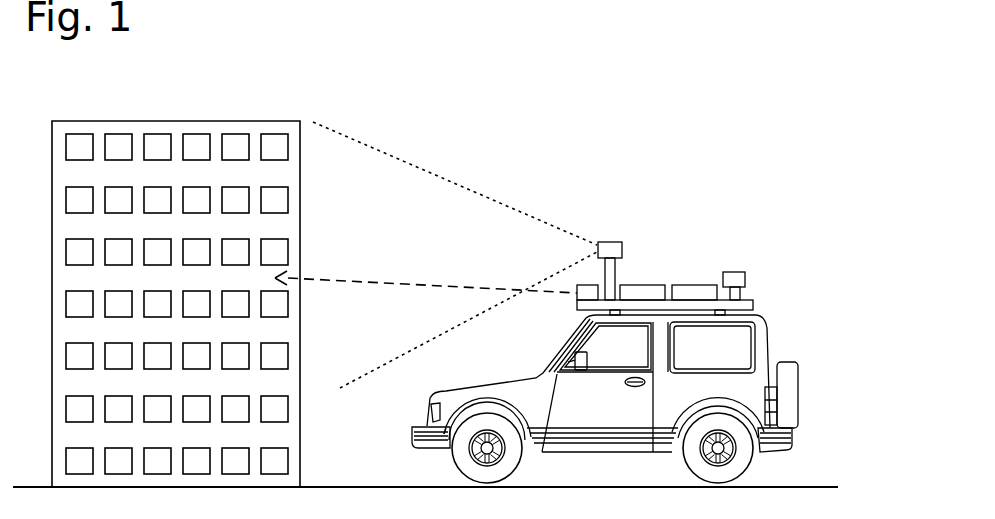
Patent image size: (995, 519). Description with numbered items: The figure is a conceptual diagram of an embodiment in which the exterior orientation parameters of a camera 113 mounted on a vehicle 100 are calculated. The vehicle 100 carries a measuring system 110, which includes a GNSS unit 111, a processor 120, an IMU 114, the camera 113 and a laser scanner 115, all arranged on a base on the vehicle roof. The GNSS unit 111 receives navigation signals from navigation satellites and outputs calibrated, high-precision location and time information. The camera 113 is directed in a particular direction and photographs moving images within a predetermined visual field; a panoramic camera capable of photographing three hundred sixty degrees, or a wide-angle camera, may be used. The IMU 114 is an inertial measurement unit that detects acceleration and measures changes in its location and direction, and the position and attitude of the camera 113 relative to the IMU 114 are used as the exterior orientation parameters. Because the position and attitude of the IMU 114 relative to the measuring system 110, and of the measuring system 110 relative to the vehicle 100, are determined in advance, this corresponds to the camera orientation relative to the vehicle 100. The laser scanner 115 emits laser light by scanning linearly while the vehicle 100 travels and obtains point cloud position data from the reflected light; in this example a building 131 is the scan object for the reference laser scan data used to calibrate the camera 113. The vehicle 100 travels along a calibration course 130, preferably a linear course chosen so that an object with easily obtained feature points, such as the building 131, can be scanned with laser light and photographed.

The vehicle 100 is at (768, 340).
The measuring system 110 is at (756, 299).
The GNSS unit 111 is at (733, 272).
The camera 113 is at (600, 242).
The IMU 114 is at (642, 285).
The laser scanner 115 is at (577, 302).
The processor 120 is at (682, 285).
The calibration course 130 is at (808, 483).
The building 131 is at (207, 121).